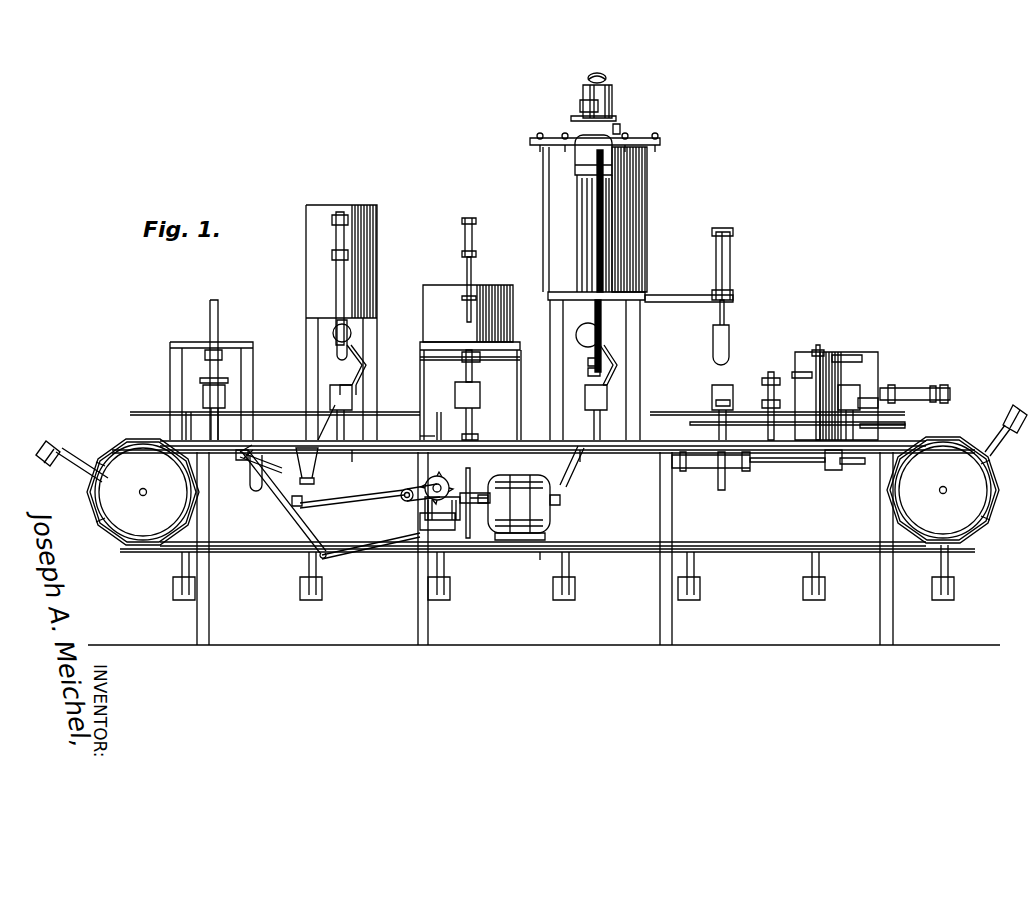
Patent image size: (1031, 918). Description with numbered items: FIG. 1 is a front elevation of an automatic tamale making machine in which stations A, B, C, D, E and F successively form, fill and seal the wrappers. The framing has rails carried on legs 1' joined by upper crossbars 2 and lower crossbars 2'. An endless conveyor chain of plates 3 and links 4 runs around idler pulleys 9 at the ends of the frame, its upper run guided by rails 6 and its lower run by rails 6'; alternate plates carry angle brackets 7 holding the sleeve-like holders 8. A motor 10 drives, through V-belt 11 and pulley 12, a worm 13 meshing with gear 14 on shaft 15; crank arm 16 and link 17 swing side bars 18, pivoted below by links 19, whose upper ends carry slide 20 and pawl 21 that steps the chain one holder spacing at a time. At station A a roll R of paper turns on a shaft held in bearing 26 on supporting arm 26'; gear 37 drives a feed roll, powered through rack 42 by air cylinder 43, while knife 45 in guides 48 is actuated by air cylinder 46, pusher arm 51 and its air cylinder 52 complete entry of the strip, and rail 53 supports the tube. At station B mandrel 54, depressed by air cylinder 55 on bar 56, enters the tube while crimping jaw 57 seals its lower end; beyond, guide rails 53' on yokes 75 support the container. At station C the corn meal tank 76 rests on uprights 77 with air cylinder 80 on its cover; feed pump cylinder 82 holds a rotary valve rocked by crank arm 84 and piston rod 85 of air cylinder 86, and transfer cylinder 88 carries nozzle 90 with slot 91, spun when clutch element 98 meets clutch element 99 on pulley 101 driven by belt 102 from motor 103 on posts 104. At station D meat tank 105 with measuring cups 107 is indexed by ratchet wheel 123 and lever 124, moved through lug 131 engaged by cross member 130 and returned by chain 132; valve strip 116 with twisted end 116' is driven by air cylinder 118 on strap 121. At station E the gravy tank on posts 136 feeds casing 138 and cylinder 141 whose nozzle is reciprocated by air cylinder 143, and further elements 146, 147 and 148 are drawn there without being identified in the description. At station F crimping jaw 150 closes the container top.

The legs 1' is at (543, 547).
The upper crossbars 2 is at (542, 462).
The lower crossbars 2' is at (541, 535).
The plates 3 is at (94, 482).
The links 4 is at (112, 448).
The idler pulleys 9 is at (106, 504).
The angle brackets 7 is at (88, 470).
The holders 8 is at (62, 446).
The rails 6 is at (597, 462).
The rails 6' is at (579, 559).
The motor 10 is at (552, 512).
The V-belt 11 is at (470, 474).
The pulley 12 is at (481, 478).
The worm 13 is at (426, 515).
The gear 14 is at (447, 482).
The shaft 15 is at (434, 486).
The crank arm 16 is at (407, 501).
The link 17 is at (370, 497).
The side bars 18 is at (283, 502).
The links 19 is at (366, 548).
The slide 20 is at (262, 462).
The pawl 21 is at (240, 460).
The bearing 26 is at (830, 384).
The supporting arm 26' is at (804, 350).
The drive gear 37 is at (905, 426).
The rack 42 is at (793, 462).
The air cylinder 43 is at (688, 468).
The knife 45 is at (878, 368).
The air cylinder 46 is at (922, 392).
The guides 48 is at (855, 355).
The pusher arm 51 is at (774, 406).
The air cylinder 52 is at (774, 382).
The rail 53 is at (797, 414).
The guide rails 53' is at (517, 394).
The mandrel 54 is at (729, 338).
The air cylinder 55 is at (730, 272).
The bar 56 is at (680, 296).
The crimping jaw 57 is at (730, 403).
The yokes 75 is at (186, 426).
The tank 76 is at (647, 215).
The uprights 77 is at (550, 386).
The air cylinder 80 is at (612, 108).
The feed pump cylinder 82 is at (600, 340).
The crank arm 84 is at (615, 360).
The piston rod 85 is at (609, 378).
The air cylinder 86 is at (568, 470).
The transfer cylinder 88 is at (590, 328).
The nozzle 90 is at (588, 362).
The longitudinal slot 91 is at (593, 377).
The conical clutch element 98 is at (606, 78).
The conical clutch element 99 is at (580, 105).
The pulley 101 is at (620, 120).
The belt 102 is at (571, 118).
The motor 103 is at (578, 152).
The posts 104 is at (597, 232).
The tank 105 is at (458, 362).
The measuring cups 107 is at (513, 348).
The valve-operating strip 116 is at (486, 289).
The lower end 116' is at (485, 366).
The air cylinder 118 is at (473, 240).
The strap 121 is at (462, 270).
The ratchet wheel 123 is at (474, 438).
The lever 124 is at (422, 436).
The cross member 130 is at (308, 498).
The lug 131 is at (252, 445).
The chain 132 is at (254, 486).
The posts 136 is at (306, 366).
The casing 138 is at (333, 333).
The cylinder 141 is at (348, 342).
The air cylinder 143 is at (333, 238).
The bracket 146 is at (312, 463).
The link 147 is at (357, 378).
The link 148 is at (360, 368).
The crimping jaw 150 is at (200, 378).
The station A is at (811, 399).
The station B is at (735, 284).
The station C is at (630, 267).
The station D is at (466, 318).
The station E is at (338, 311).
The station F is at (517, 369).
The roll R is at (854, 395).